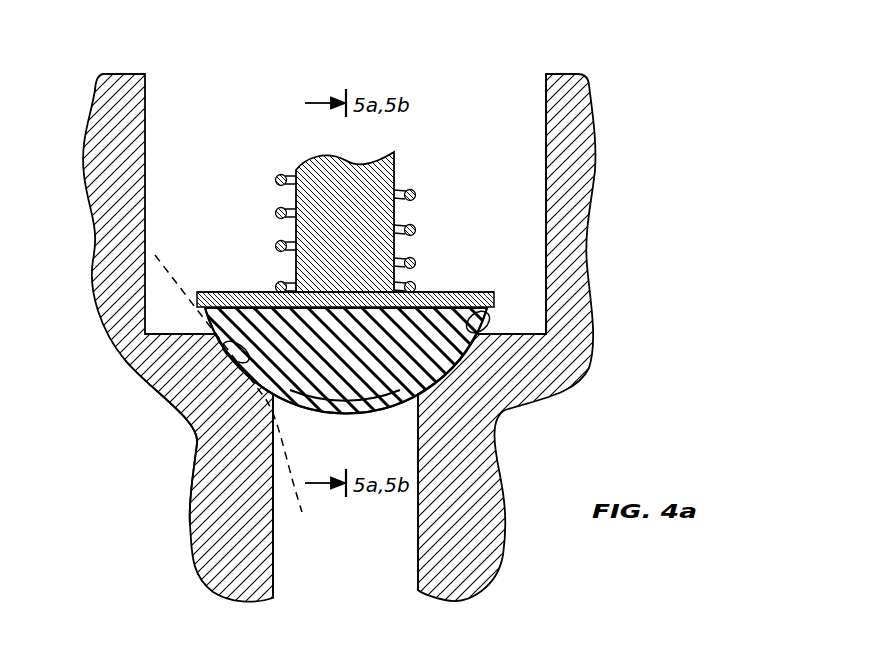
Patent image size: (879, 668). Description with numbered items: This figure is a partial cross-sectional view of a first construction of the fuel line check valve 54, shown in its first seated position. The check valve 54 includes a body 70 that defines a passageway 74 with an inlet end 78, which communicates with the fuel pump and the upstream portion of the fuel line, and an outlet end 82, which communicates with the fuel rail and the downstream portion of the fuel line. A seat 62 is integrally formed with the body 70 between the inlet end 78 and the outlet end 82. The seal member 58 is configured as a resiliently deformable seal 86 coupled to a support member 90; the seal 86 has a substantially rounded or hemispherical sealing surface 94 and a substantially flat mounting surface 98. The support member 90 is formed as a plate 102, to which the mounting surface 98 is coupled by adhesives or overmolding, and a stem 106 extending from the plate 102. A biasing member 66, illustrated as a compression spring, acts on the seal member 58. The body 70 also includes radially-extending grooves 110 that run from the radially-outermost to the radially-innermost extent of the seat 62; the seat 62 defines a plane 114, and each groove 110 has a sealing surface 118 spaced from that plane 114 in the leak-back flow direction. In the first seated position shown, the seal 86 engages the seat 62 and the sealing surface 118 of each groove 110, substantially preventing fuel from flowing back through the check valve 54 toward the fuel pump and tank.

The check valve 54 is at (642, 85).
The seal member 58 is at (487, 187).
The seat 62 is at (397, 392).
The biasing member 66 is at (412, 196).
The body 70 is at (572, 273).
The passageway 74 is at (546, 208).
The inlet end 78 is at (416, 560).
The outlet end 82 is at (145, 118).
The seal 86 is at (330, 388).
The support member 90 is at (406, 244).
The sealing surface 94 is at (370, 413).
The mounting surface 98 is at (440, 292).
The plate 102 is at (236, 292).
The stem 106 is at (308, 198).
The grooves 110 is at (197, 444).
The plane 114 is at (241, 398).
The sealing surface 118 is at (218, 348).